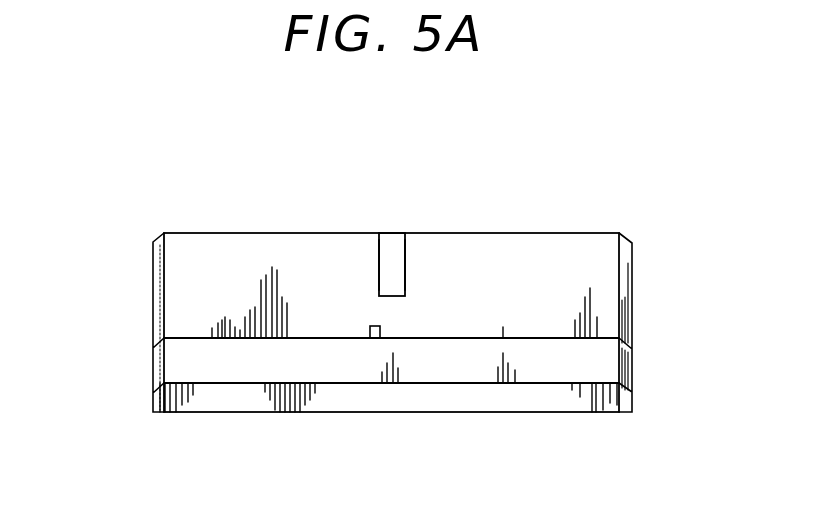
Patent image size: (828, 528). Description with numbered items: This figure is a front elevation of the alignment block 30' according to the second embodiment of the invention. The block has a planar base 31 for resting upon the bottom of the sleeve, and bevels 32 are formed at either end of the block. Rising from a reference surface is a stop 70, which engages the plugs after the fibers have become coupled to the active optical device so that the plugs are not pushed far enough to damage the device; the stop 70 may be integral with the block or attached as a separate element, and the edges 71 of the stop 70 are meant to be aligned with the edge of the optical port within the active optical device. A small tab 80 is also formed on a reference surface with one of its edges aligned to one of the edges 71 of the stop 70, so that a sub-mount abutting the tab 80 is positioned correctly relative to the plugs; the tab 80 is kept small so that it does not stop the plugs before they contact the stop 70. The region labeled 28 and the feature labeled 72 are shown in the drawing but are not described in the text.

The alignment block 30' is at (395, 267).
The tape guide surface 28 is at (253, 241).
The stop 70 is at (395, 243).
The edges of the stop 71 is at (378, 278).
The slot side wall 72 is at (406, 278).
The tab 80 is at (381, 333).
The planar base 31 is at (450, 413).
The bevels 32 is at (158, 281).